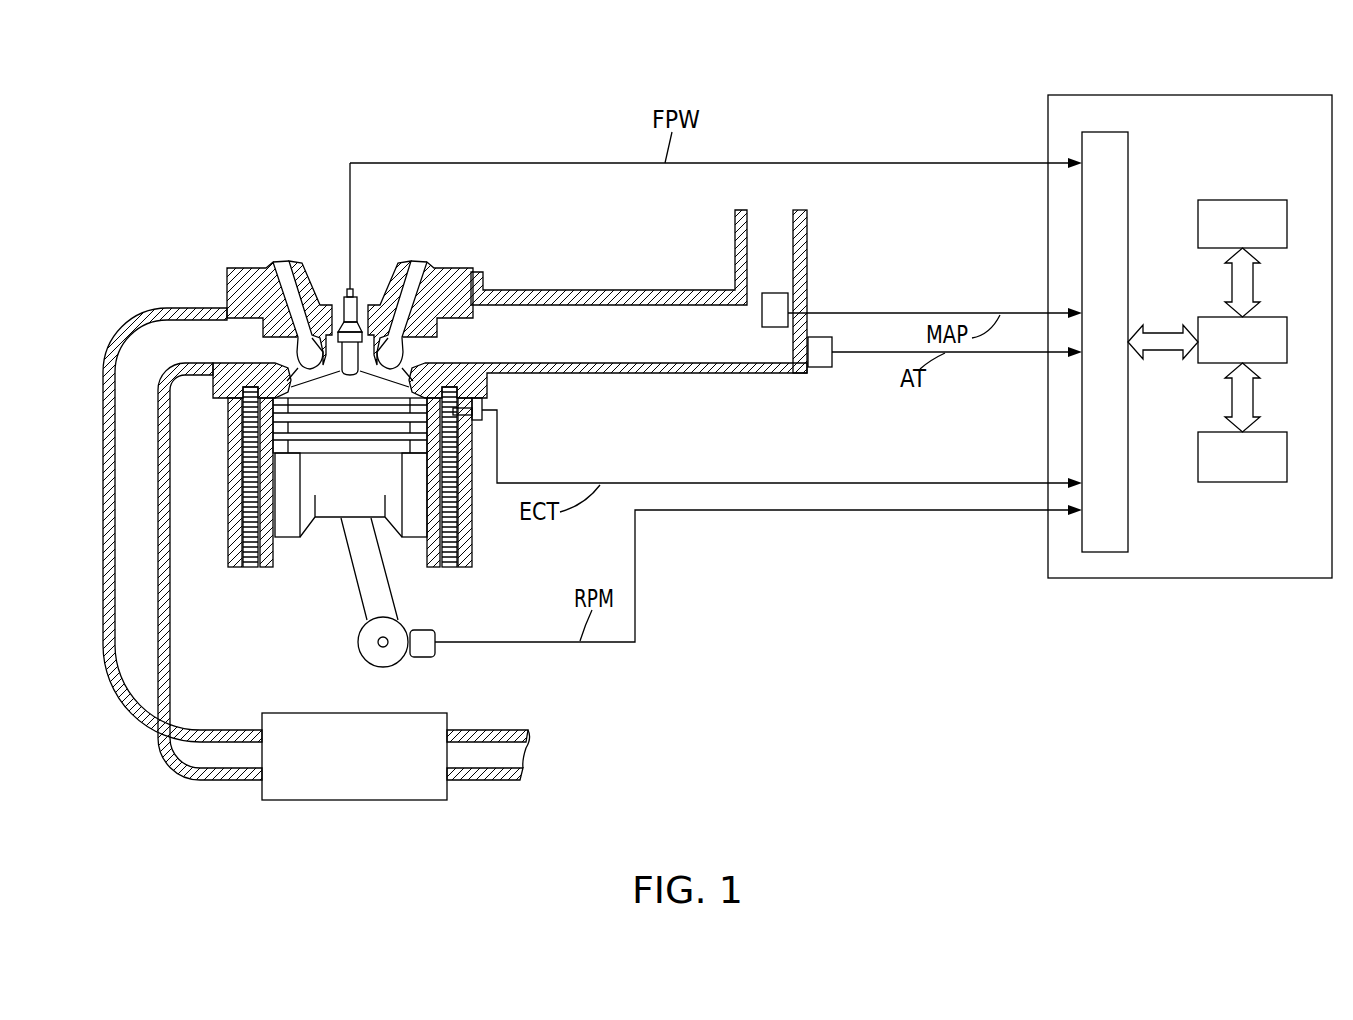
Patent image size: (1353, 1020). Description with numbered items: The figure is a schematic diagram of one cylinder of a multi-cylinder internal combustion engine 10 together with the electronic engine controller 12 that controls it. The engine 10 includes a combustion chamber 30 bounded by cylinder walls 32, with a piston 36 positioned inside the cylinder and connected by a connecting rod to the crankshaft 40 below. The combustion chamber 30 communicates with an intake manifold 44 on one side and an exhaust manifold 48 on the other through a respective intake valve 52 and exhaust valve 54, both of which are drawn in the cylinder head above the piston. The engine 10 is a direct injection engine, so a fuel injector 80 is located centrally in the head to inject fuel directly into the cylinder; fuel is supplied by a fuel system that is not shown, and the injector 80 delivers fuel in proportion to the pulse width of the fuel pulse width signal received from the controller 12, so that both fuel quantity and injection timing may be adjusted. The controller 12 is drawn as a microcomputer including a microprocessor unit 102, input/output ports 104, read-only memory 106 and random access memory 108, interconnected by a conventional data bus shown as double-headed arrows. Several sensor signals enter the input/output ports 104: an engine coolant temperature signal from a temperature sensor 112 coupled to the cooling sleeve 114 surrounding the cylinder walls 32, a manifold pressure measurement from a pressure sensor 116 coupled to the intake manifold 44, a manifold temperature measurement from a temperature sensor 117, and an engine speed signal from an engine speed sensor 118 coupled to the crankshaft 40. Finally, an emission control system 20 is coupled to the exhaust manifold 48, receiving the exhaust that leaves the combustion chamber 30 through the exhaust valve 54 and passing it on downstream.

The internal combustion engine 10 is at (194, 242).
The electronic engine controller 12 is at (1187, 95).
The emission control system 20 is at (318, 713).
The combustion chamber 30 is at (337, 387).
The cylinder walls 32 is at (272, 560).
The piston 36 is at (370, 495).
The crankshaft 40 is at (388, 657).
The intake manifold 44 is at (712, 342).
The exhaust manifold 48 is at (121, 400).
The intake valve 52 is at (403, 364).
The exhaust valve 54 is at (297, 364).
The fuel injector 80 is at (346, 291).
The microprocessor unit 102 is at (1280, 317).
The input/output ports 104 is at (1130, 147).
The read-only memory 106 is at (1243, 200).
The random access memory 108 is at (1277, 432).
The temperature sensor 112 is at (483, 404).
The cooling sleeve 114 is at (453, 569).
The pressure sensor 116 is at (781, 293).
The temperature sensor 117 is at (819, 368).
The engine speed sensor 118 is at (440, 650).